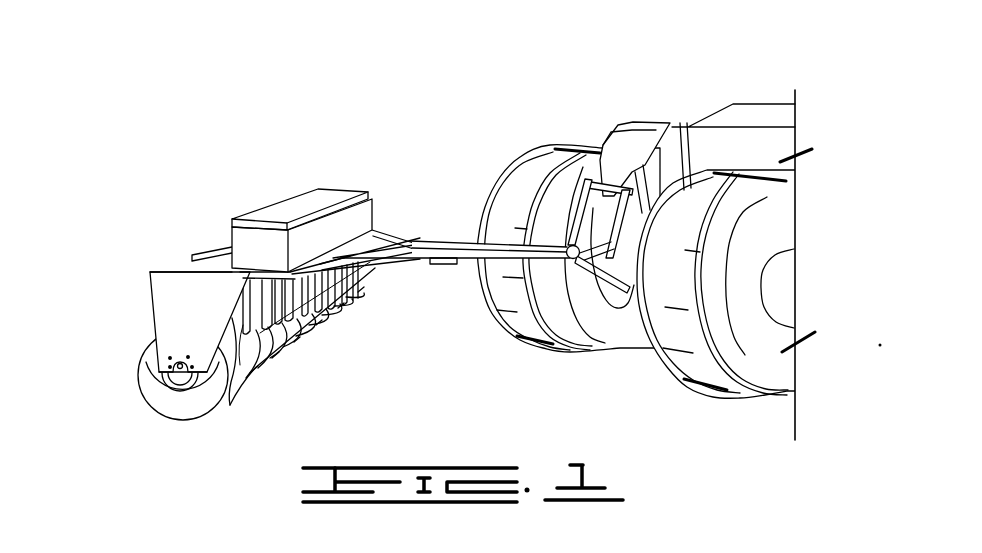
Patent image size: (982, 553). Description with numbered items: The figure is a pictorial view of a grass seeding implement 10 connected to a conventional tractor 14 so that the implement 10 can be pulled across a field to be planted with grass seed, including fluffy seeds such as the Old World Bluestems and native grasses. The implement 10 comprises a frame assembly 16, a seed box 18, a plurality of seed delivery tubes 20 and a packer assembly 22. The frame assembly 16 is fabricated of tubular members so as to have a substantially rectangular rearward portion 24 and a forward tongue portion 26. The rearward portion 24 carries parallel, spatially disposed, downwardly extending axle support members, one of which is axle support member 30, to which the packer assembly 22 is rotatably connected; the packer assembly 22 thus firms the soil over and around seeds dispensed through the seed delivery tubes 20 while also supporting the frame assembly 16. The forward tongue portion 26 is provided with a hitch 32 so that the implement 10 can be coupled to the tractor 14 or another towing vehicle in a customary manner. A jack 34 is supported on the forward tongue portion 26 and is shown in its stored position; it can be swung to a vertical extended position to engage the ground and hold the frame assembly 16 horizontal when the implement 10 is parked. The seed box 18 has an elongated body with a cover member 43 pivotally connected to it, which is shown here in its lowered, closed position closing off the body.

The implement 10 is at (413, 64).
The tractor 14 is at (754, 74).
The frame assembly 16 is at (138, 301).
The seed box 18 is at (222, 190).
The seed delivery tubes 20 is at (291, 325).
The packer assembly 22 is at (230, 402).
The rearward portion 24 is at (222, 254).
The forward tongue portion 26 is at (418, 242).
The axle support member 30 is at (167, 343).
The hitch 32 is at (579, 270).
The jack 34 is at (438, 265).
The cover member 43 is at (272, 216).